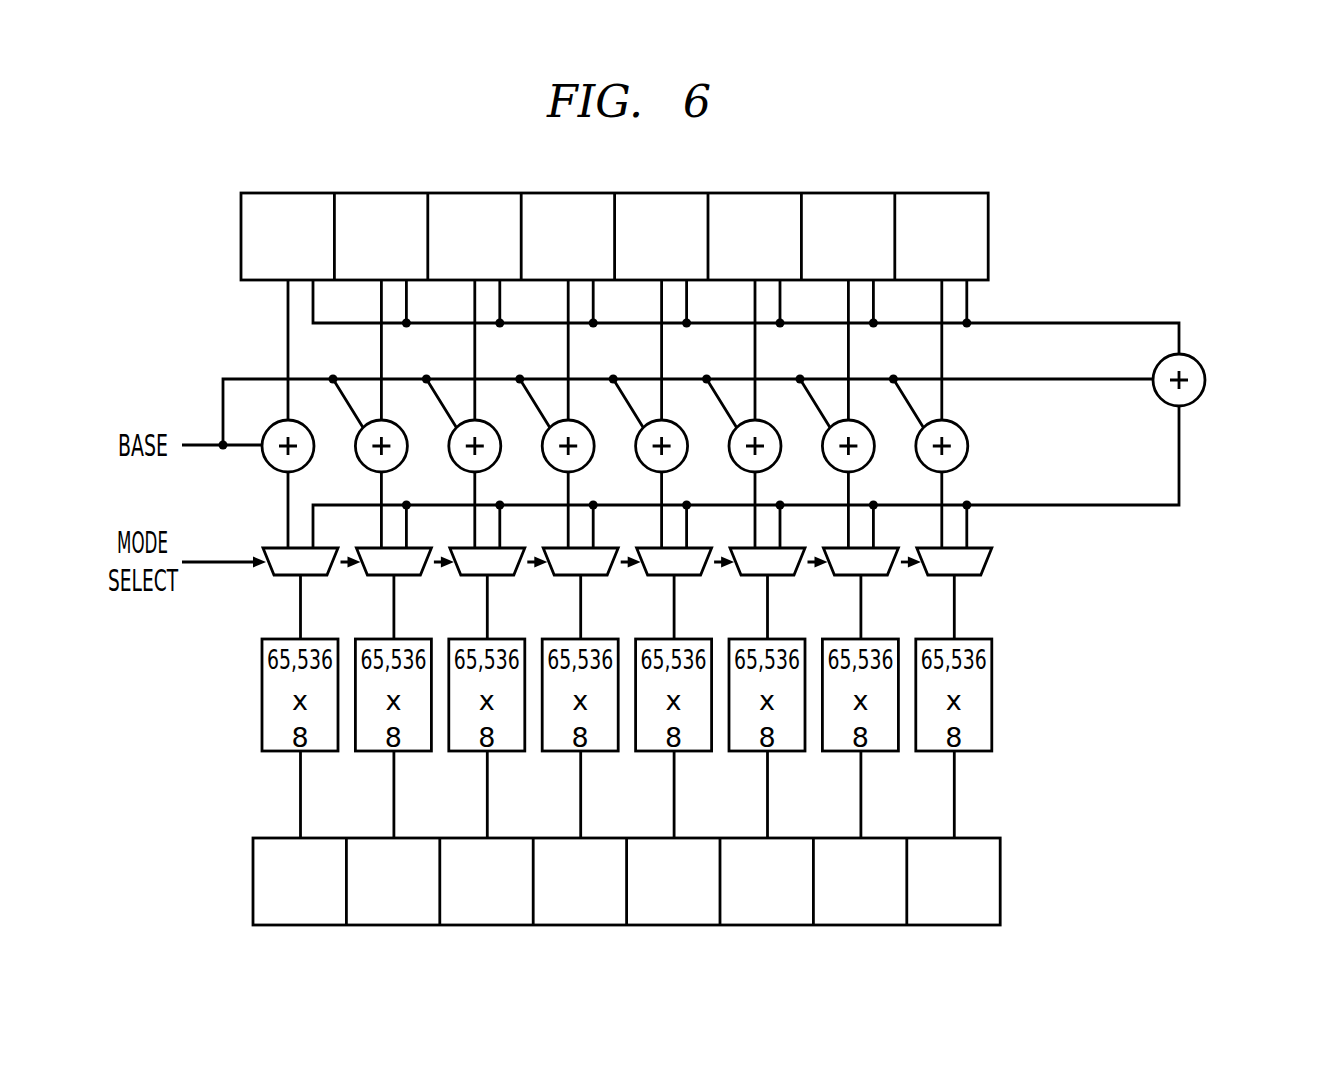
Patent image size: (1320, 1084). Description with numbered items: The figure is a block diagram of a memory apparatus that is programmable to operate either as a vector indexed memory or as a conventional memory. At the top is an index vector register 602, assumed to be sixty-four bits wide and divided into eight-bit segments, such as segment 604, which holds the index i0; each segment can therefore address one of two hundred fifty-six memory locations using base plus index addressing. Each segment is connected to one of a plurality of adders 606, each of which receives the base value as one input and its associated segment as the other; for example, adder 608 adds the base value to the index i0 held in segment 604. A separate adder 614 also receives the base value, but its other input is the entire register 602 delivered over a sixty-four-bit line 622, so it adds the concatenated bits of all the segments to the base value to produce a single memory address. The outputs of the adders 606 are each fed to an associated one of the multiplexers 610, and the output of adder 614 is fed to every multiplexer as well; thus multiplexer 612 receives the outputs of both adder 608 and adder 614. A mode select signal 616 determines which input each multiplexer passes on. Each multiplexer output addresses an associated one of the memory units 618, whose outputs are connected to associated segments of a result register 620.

The index vector register 602 is at (671, 213).
The segment 604 is at (940, 193).
The adders 606 is at (682, 430).
The adder 608 is at (960, 426).
The multiplexers 610 is at (682, 580).
The multiplexer 612 is at (985, 574).
The adder 614 is at (1205, 380).
The mode select signal 616 is at (908, 565).
The memory units 618 is at (1020, 698).
The result register 620 is at (1020, 882).
The 64-bit line 622 is at (1055, 323).